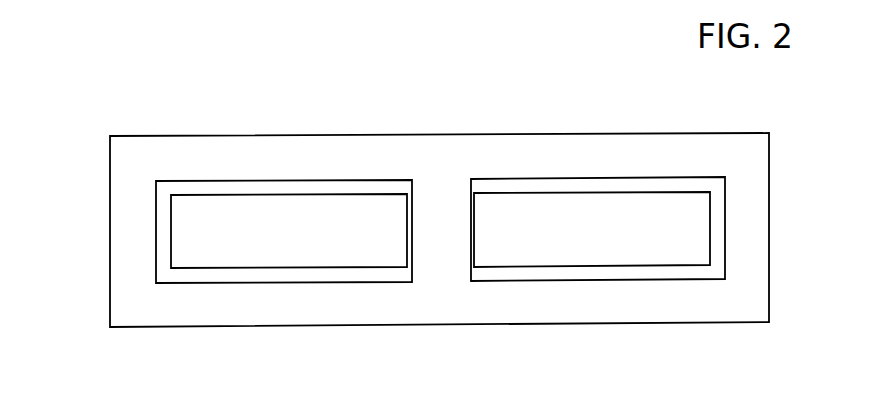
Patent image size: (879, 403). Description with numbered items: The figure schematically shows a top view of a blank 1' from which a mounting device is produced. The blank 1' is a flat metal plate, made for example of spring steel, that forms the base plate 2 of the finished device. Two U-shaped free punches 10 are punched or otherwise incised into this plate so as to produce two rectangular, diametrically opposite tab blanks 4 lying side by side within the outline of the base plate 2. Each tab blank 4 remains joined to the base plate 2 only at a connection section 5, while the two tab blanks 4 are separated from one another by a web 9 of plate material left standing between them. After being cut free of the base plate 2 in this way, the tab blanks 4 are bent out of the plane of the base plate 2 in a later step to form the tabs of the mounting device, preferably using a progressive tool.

The blank 1' is at (589, 85).
The base plate 2 is at (140, 168).
The tab blank 4 is at (258, 237).
The connection section 5 is at (410, 238).
The web 9 is at (442, 208).
The U-shaped free punch 10 is at (163, 242).